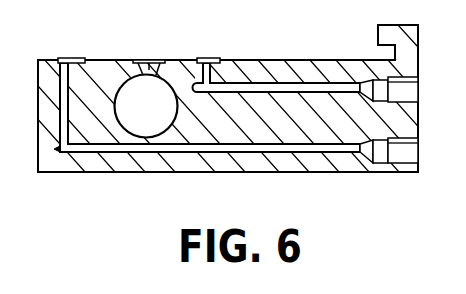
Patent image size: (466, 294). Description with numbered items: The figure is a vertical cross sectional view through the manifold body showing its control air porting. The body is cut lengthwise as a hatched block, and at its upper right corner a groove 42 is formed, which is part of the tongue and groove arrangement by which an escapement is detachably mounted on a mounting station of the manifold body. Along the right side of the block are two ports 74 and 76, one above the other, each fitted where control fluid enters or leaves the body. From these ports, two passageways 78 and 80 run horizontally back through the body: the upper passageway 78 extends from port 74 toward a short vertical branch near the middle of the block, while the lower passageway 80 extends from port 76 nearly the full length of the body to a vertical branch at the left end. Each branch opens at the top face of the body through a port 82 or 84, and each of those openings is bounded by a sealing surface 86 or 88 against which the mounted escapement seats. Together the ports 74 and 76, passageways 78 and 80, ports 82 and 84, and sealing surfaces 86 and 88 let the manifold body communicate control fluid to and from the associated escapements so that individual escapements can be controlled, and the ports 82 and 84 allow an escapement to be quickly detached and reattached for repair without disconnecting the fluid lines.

The groove 42 is at (383, 47).
The port 74 is at (418, 80).
The port 76 is at (418, 139).
The passageway 78 is at (318, 82).
The passageway 80 is at (277, 153).
The port 82 is at (202, 59).
The port 84 is at (68, 59).
The sealing surface 86 is at (209, 59).
The sealing surface 88 is at (73, 59).